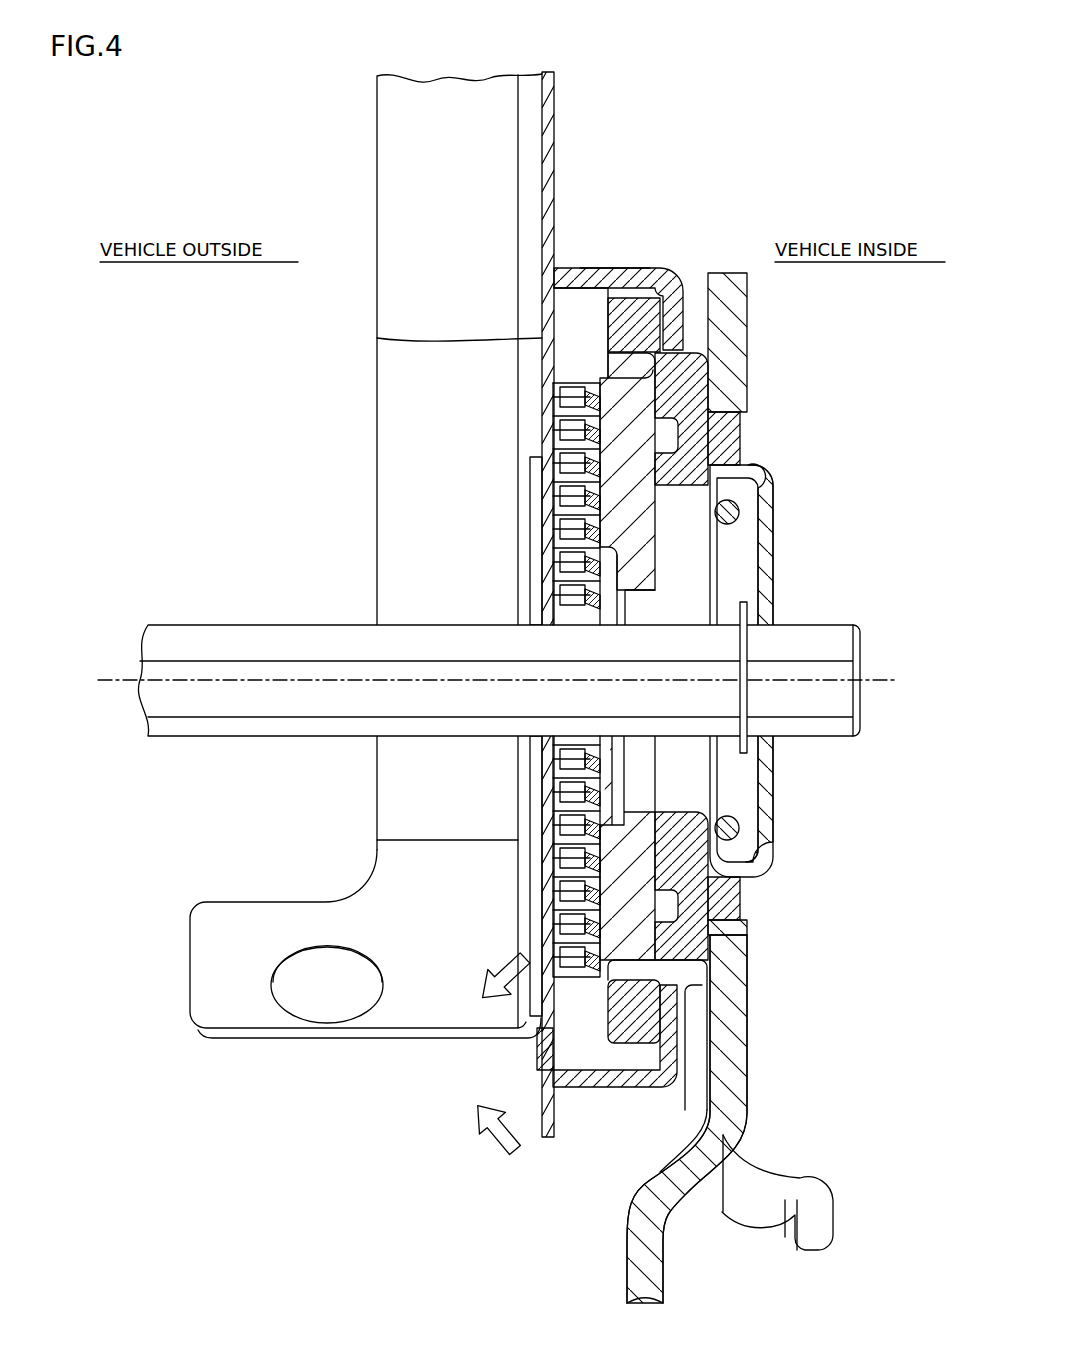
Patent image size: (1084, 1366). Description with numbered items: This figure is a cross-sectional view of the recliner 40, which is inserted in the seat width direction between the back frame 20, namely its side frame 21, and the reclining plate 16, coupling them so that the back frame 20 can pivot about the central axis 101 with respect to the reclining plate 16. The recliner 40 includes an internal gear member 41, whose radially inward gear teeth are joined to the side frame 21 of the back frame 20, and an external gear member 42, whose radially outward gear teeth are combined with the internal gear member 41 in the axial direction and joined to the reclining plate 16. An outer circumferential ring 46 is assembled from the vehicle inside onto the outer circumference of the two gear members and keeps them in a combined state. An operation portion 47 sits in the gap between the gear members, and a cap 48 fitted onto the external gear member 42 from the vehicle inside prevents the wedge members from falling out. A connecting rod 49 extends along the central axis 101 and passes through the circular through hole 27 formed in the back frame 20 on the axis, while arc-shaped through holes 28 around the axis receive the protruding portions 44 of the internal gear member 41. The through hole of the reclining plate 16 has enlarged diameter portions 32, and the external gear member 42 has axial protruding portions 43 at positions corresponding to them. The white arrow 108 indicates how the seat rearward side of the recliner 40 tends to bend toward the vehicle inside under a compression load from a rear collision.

The reclining plate 16 is at (726, 1073).
The back frame 20 is at (556, 140).
The side frame 21 is at (548, 341).
The through hole 27 is at (556, 570).
The through holes 28 is at (536, 1050).
The enlarged diameter portions 32 is at (736, 420).
The recliner 40 is at (652, 268).
The internal gear member 41 is at (556, 492).
The external gear member 42 is at (692, 470).
The protruding portions 43 is at (738, 440).
The protruding portions 44 is at (550, 1080).
The outer circumferential ring 46 is at (614, 282).
The operation portion 47 is at (736, 821).
The cap 48 is at (760, 530).
The connecting rod 49 is at (241, 641).
The central axis 101 is at (105, 676).
The white arrow 108 is at (488, 1134).